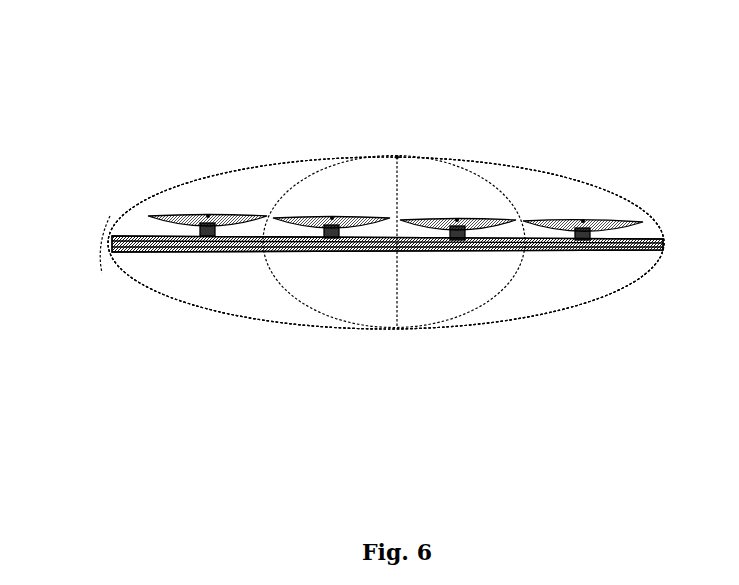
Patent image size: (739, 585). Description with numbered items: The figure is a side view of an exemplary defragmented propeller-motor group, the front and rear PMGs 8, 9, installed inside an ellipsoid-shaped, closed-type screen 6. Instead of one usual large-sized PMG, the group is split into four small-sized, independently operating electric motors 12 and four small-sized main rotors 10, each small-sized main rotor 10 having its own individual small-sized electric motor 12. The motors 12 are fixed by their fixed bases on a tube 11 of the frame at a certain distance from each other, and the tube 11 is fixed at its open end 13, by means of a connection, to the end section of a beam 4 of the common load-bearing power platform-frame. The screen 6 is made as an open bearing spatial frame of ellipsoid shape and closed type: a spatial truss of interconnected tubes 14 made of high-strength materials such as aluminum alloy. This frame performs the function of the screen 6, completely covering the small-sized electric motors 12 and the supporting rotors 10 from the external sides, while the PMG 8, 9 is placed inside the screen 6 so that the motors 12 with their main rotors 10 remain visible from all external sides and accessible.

The screen 6 is at (220, 172).
The front PMG 8 is at (178, 203).
The rear PMG 9 is at (178, 203).
The small-sized (defragmented) main rotors 10 is at (562, 221).
The small-sized (defragmented) independently operating electric motors 12 is at (210, 237).
The open end of the tube or beam of the load-bearing power platform-frame 13 is at (112, 242).
The beam of the load-bearing power platform-frame 4 is at (173, 248).
The tube 11 is at (173, 248).
The tubes of the open spatial tubular frame-screen 14 is at (283, 280).